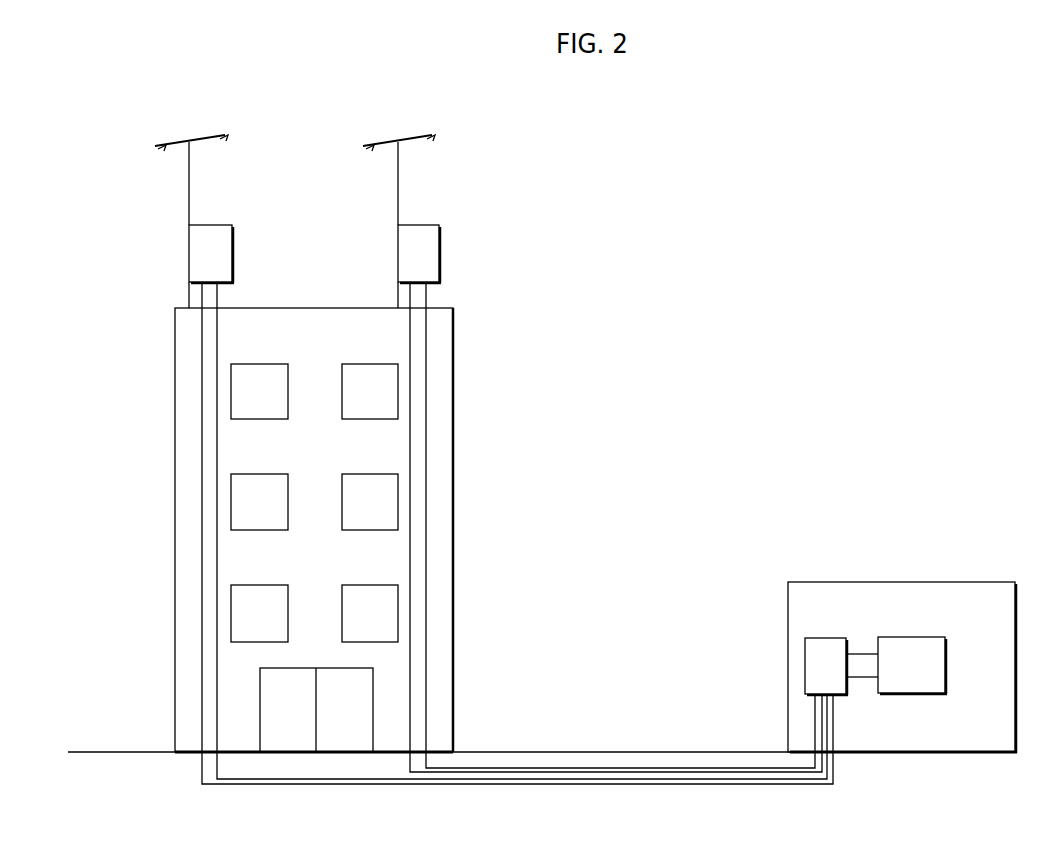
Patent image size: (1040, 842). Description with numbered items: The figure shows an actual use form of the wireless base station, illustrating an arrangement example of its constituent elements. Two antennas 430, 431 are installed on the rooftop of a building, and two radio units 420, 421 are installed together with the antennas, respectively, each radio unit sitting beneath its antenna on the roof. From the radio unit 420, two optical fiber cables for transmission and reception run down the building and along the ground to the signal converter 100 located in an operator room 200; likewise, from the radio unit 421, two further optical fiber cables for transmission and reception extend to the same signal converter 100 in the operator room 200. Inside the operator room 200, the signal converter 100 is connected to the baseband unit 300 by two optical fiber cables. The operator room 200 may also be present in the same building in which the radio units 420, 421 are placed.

The signal converter 100 is at (822, 637).
The operator room 200 is at (856, 582).
The baseband unit 300 is at (895, 637).
The radio unit 420 is at (206, 225).
The radio unit 421 is at (414, 225).
The antenna 430 is at (214, 132).
The antenna 431 is at (422, 132).